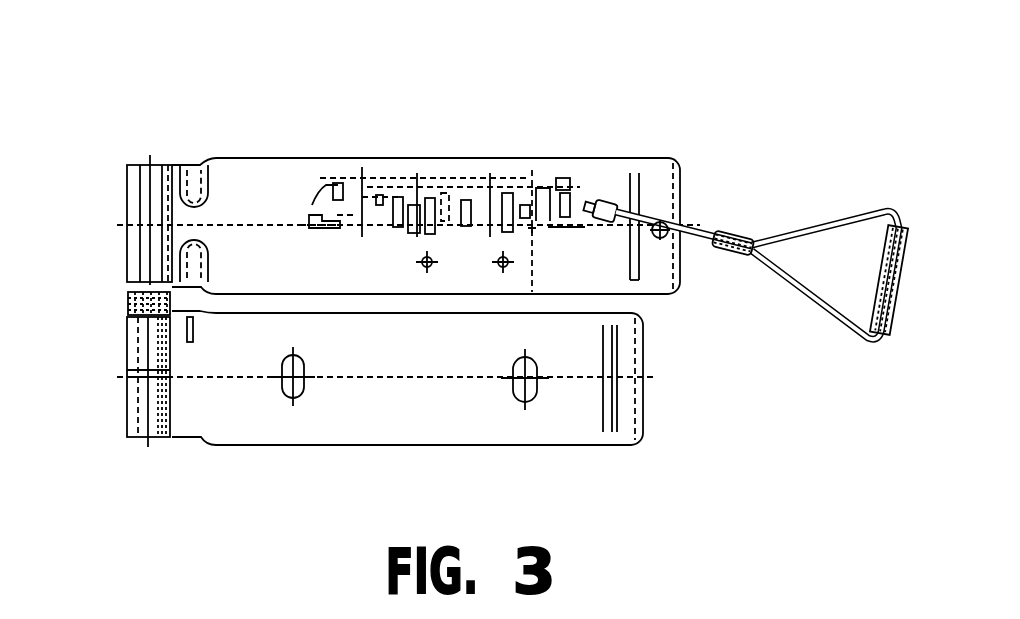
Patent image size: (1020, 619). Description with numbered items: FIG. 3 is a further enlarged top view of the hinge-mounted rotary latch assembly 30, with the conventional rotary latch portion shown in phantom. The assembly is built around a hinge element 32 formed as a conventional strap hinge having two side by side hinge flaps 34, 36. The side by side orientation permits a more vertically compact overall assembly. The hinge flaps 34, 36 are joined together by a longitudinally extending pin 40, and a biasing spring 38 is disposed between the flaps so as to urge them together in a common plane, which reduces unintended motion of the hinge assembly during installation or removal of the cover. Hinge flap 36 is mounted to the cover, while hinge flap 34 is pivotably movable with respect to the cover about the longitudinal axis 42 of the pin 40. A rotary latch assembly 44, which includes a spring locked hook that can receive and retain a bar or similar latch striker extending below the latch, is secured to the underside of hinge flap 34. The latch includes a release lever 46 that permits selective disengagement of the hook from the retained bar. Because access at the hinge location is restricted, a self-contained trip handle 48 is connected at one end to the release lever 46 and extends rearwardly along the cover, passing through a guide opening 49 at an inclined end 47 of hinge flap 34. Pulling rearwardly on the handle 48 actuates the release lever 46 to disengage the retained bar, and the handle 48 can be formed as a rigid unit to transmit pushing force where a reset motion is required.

The hinge assembly 30 is at (474, 132).
The hinge element 32 is at (213, 146).
The hinge flap 34 is at (562, 180).
The hinge flap 36 is at (563, 422).
The biasing spring 38 is at (130, 302).
The pin 40 is at (133, 413).
The longitudinal axis 42 is at (148, 445).
The rotary latch assembly 44 is at (324, 183).
The release lever 46 is at (597, 204).
The inclined end 47 is at (657, 277).
The trip handle 48 is at (730, 233).
The guide opening 49 is at (666, 240).